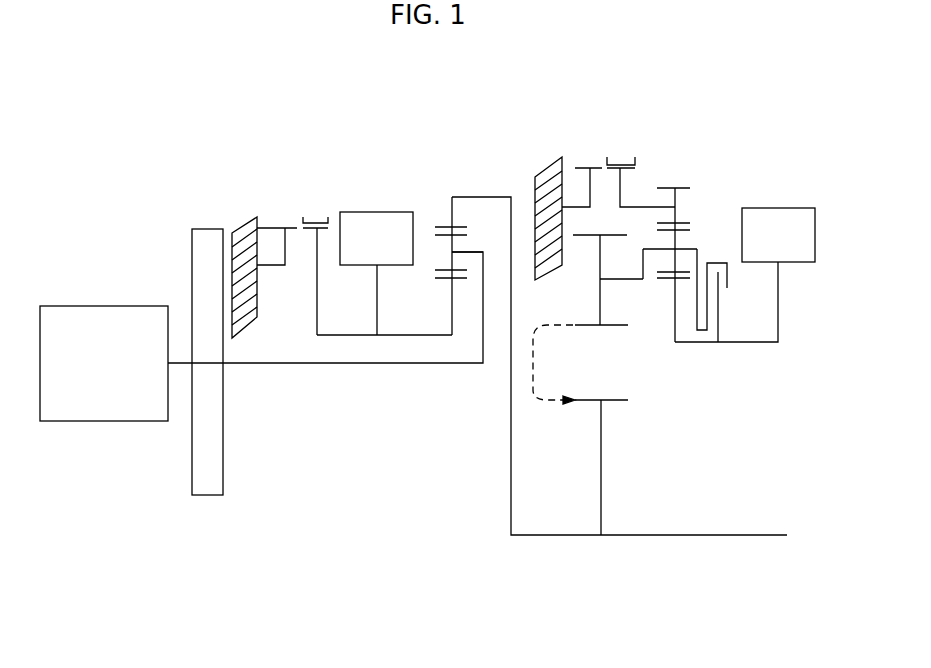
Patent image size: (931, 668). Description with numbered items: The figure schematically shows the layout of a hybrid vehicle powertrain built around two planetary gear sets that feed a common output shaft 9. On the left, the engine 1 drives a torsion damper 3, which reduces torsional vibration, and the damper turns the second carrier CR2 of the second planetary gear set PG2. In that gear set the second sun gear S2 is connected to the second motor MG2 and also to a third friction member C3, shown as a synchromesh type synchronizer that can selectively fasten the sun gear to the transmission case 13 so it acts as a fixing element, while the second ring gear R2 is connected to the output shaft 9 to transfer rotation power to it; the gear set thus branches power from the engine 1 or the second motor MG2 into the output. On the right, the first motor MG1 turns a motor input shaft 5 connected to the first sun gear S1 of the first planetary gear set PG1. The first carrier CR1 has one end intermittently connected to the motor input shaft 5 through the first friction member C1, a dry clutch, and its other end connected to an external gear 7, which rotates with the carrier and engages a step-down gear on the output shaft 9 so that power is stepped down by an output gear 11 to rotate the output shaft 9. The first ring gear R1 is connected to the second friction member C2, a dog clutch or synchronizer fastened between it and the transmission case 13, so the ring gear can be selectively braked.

The engine 1 is at (105, 306).
The torsion damper 3 is at (192, 470).
The transmission case 13 is at (245, 228).
The third friction member C3 is at (317, 215).
The second motor MG2 is at (376, 273).
The second planetary gear set PG2 is at (455, 175).
The second ring gear R2 is at (452, 212).
The second sun gear S2 is at (452, 300).
The second carrier CR2 is at (452, 253).
The second friction member C2 is at (620, 160).
The first planetary gear set PG1 is at (673, 170).
The first ring gear R1 is at (677, 210).
The first carrier CR1 is at (677, 240).
The first sun gear S1 is at (674, 327).
The first motor MG1 is at (778, 235).
The first friction member C1 is at (727, 280).
The external gear 7 is at (600, 308).
The output gear 11 is at (602, 445).
The motor input shaft 5 is at (742, 342).
The output shaft 9 is at (713, 535).